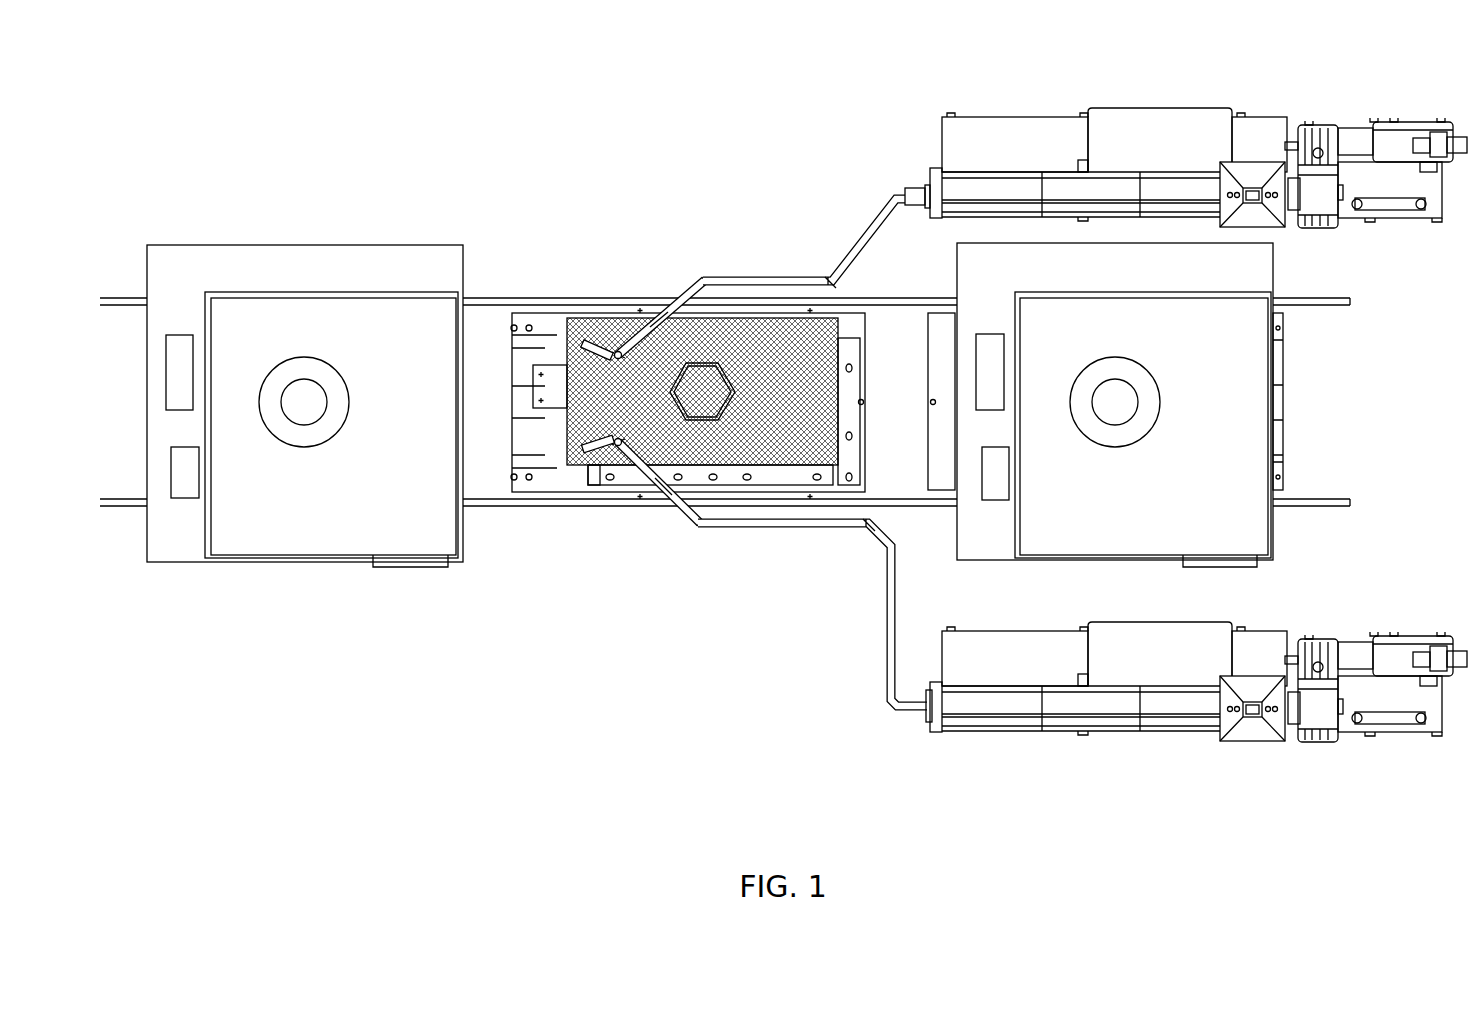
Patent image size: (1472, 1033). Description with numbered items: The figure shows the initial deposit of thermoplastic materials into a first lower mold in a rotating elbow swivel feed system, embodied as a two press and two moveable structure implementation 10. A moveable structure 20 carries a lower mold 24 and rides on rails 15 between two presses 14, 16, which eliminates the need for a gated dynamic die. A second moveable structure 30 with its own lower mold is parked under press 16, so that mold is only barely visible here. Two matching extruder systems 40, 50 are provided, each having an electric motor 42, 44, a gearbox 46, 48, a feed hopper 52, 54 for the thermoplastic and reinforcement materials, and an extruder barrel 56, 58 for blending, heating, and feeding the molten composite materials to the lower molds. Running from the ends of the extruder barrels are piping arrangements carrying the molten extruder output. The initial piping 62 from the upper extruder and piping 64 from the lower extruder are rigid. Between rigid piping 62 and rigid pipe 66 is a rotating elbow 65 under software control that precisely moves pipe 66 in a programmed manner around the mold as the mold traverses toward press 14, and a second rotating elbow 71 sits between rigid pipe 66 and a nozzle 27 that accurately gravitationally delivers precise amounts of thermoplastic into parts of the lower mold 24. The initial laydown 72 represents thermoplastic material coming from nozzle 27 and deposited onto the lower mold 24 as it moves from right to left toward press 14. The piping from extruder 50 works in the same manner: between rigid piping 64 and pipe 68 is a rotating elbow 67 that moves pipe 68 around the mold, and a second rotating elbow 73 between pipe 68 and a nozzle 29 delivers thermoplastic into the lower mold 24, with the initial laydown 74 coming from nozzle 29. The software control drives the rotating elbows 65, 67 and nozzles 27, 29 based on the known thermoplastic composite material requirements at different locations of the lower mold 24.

The two press and two moveable structure implementation 10 is at (506, 124).
The press 14 is at (299, 538).
The rails 15 is at (1330, 306).
The press 16 is at (1113, 540).
The moveable structure 20 is at (535, 318).
The lower mold 24 is at (756, 337).
The nozzle 27 is at (620, 347).
The nozzle 29 is at (620, 445).
The second moveable structure 30 is at (938, 483).
The extruder system 40 is at (1142, 66).
The electric motor 42 is at (1407, 142).
The electric motor 44 is at (1407, 656).
The gearbox 46 is at (1323, 140).
The gearbox 48 is at (1323, 654).
The extruder system 50 is at (1142, 772).
The feed hopper 52 is at (1262, 173).
The feed hopper 54 is at (1262, 687).
The extruder barrel 56 is at (980, 193).
The extruder barrel 58 is at (980, 707).
The rigid piping 62 is at (815, 280).
The rigid piping 64 is at (860, 525).
The rotating elbow 65 is at (700, 275).
The rigid pipe 66 is at (680, 292).
The rotating elbow 67 is at (690, 530).
The pipe 68 is at (680, 507).
The second rotating elbow 71 is at (633, 352).
The initial laydown of thermoplastic materials 72 is at (598, 340).
The second rotating elbow 73 is at (632, 443).
The initial laydown of thermoplastic materials 74 is at (603, 450).